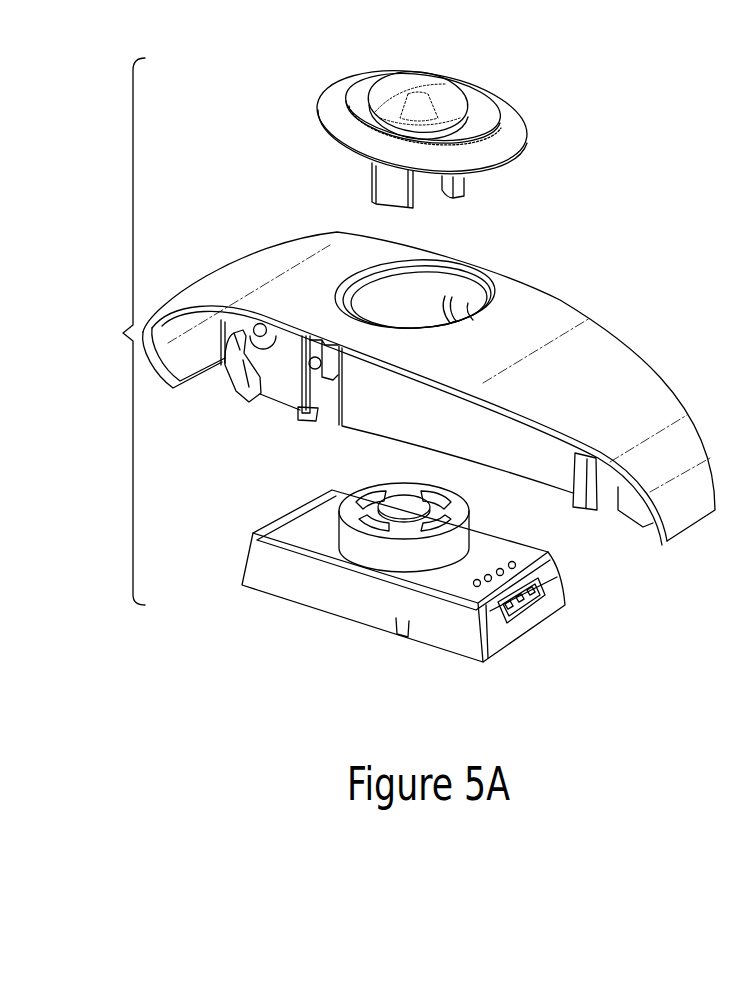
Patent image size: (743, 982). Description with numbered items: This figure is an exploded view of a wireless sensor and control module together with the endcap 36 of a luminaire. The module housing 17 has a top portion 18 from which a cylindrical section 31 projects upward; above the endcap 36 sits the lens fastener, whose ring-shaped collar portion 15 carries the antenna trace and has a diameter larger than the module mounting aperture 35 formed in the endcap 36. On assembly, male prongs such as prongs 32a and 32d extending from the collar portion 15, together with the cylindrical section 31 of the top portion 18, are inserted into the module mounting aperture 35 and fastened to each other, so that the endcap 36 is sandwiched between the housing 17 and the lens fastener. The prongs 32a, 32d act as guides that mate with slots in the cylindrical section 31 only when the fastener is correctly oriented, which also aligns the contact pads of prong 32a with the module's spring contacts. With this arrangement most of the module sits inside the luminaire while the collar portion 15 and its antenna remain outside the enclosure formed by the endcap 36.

The collar portion 15 is at (523, 143).
The male prong 32a is at (372, 190).
The male prong 32d is at (467, 186).
The endcap 36 is at (230, 268).
The module mounting aperture 35 is at (467, 283).
The top portion of the housing 18 is at (288, 512).
The cylindrical section 31 is at (470, 527).
The housing 17 is at (530, 623).